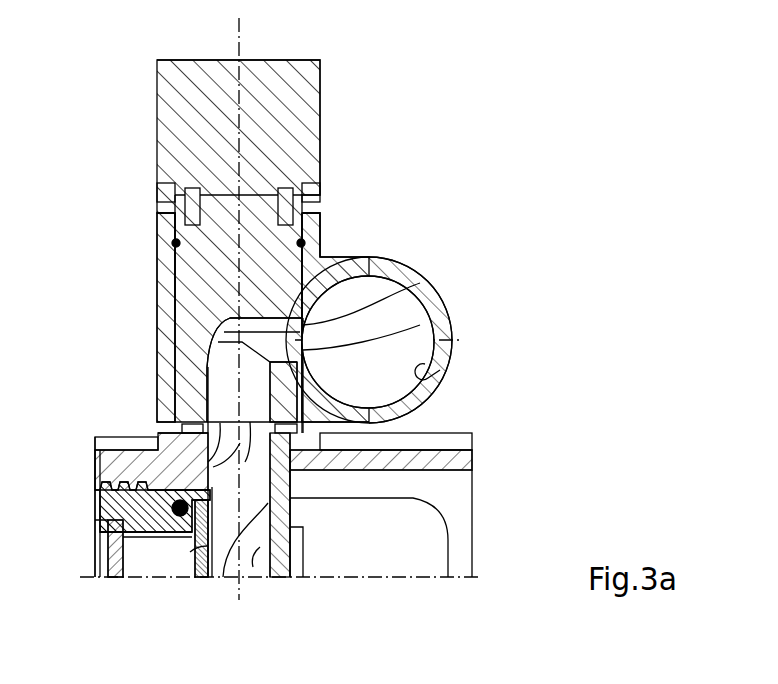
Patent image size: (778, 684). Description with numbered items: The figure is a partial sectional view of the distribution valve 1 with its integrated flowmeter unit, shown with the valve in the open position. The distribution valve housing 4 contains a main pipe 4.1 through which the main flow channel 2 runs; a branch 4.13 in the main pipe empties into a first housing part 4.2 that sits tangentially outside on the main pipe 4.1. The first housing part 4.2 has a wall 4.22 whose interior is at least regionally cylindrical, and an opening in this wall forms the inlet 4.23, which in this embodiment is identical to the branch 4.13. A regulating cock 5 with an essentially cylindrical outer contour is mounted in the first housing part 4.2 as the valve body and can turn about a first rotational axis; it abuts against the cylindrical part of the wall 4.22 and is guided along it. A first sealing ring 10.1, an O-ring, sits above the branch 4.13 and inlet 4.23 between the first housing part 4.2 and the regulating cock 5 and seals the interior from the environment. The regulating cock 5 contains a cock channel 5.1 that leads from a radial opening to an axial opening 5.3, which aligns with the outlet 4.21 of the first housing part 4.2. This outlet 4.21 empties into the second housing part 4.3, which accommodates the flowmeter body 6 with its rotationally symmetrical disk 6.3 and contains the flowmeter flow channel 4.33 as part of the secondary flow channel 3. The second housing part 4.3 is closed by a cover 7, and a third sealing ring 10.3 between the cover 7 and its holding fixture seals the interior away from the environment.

The distribution valve 1 is at (388, 100).
The main flow channel 2 is at (440, 370).
The secondary flow channel 3 is at (253, 567).
The distribution valve housing 4 is at (422, 185).
The main pipe 4.1 is at (400, 272).
The branch 4.13 is at (420, 325).
The first housing part 4.2 is at (323, 225).
The outlet 4.21 is at (205, 431).
The wall 4.22 is at (157, 270).
The inlet 4.23 is at (420, 283).
The second housing part 4.3 is at (472, 456).
The flowmeter flow channel 4.33 is at (223, 577).
The regulating cock 5 is at (165, 305).
The cock channel 5.1 is at (222, 378).
The axial opening 5.3 is at (115, 478).
The flowmeter body 6 is at (145, 562).
The rotationally symmetrical disk 6.3 is at (190, 552).
The cover 7 is at (110, 510).
The first sealing ring 10.1 is at (171, 241).
The third sealing ring 10.3 is at (175, 538).